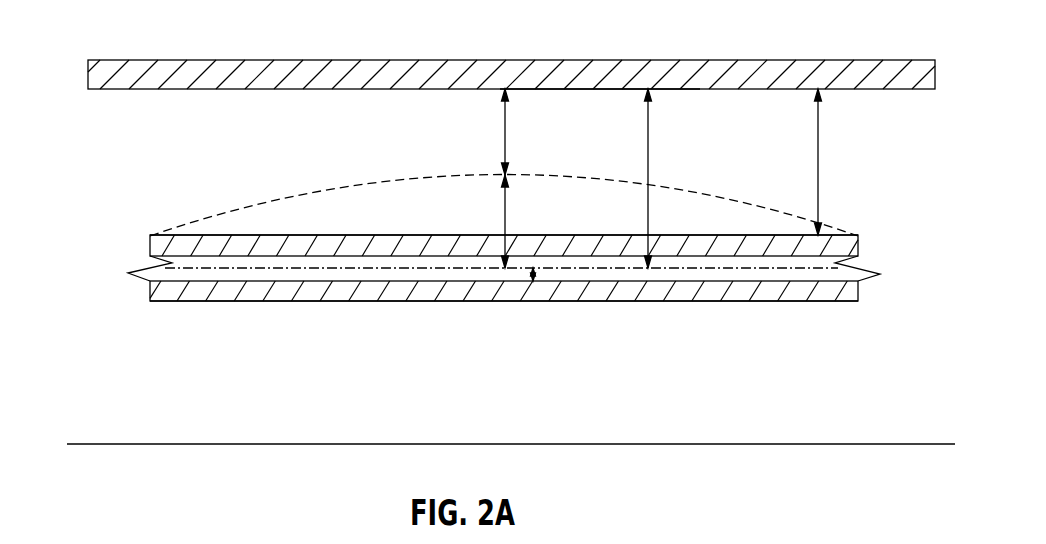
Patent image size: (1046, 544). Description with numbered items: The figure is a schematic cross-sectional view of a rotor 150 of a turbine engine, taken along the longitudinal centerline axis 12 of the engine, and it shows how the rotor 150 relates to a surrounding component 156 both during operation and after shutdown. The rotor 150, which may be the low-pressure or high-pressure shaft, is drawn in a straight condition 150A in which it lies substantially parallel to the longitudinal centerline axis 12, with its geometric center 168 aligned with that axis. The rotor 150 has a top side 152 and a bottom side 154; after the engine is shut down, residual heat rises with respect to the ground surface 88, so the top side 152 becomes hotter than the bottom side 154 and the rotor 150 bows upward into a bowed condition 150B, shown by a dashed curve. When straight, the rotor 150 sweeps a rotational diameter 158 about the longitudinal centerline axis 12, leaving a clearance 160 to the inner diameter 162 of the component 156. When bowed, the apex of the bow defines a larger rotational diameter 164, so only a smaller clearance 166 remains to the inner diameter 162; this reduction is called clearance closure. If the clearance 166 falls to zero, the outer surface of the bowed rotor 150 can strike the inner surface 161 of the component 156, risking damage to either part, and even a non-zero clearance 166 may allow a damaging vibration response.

The longitudinal centerline axis 12 is at (460, 268).
The ground surface 88 is at (160, 443).
The rotor 150 is at (228, 236).
The straight condition 150A is at (293, 302).
The bowed condition 150B is at (726, 197).
The top side 152 is at (132, 248).
The bottom side 154 is at (132, 290).
The component 156 is at (257, 74).
The rotational diameter 158 is at (538, 284).
The clearance 160 is at (820, 157).
The inner surface 161 is at (594, 92).
The inner diameter 162 is at (650, 130).
The rotational diameter 164 is at (505, 215).
The clearance 166 is at (505, 143).
The geometric center 168 is at (340, 268).